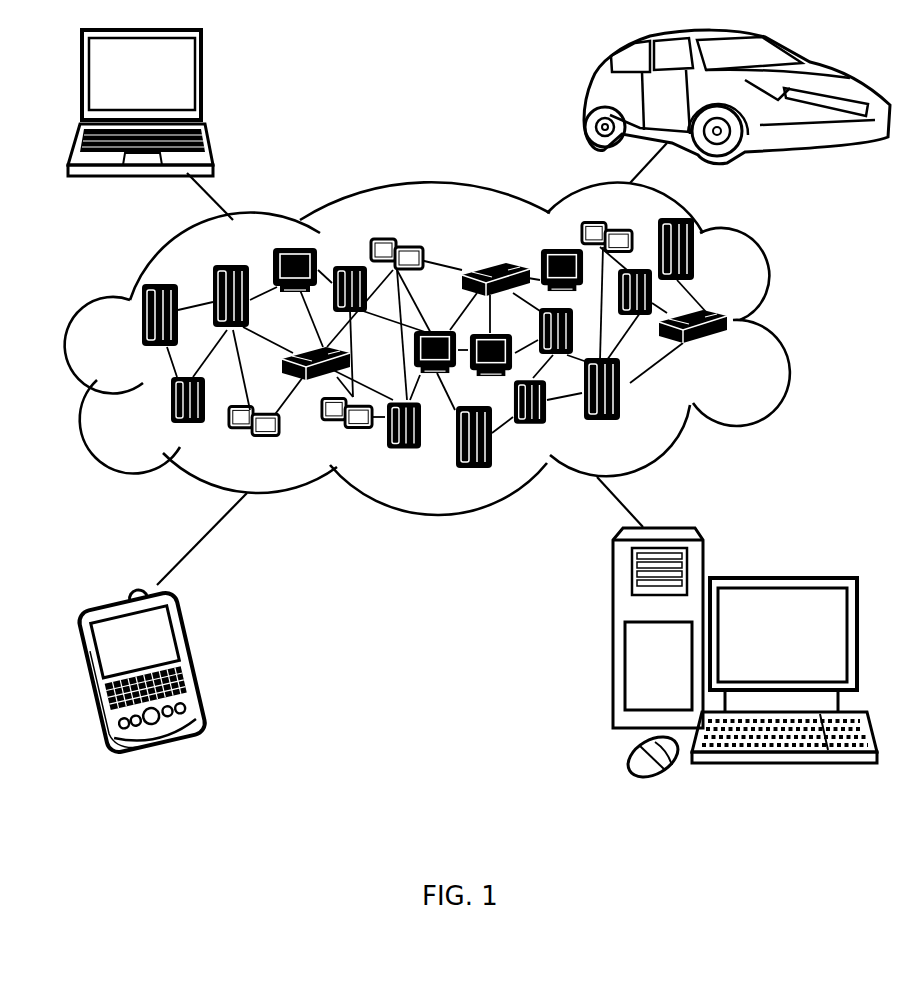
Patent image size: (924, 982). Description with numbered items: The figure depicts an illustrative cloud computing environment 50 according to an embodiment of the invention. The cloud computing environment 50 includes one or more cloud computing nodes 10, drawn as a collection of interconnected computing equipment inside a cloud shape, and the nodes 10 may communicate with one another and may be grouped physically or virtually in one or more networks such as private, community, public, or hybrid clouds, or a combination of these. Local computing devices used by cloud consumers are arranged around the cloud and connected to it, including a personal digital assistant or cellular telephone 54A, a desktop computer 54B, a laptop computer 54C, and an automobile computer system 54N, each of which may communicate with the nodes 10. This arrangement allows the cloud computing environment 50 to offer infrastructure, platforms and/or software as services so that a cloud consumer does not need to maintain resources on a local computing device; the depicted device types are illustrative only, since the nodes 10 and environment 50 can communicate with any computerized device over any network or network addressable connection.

The cloud computing nodes 10 is at (733, 351).
The cloud computing environment 50 is at (782, 322).
The personal digital assistant (PDA) or cellular telephone 54A is at (192, 659).
The desktop computer 54B is at (780, 578).
The laptop computer 54C is at (203, 84).
The automobile computer system 54N is at (588, 100).